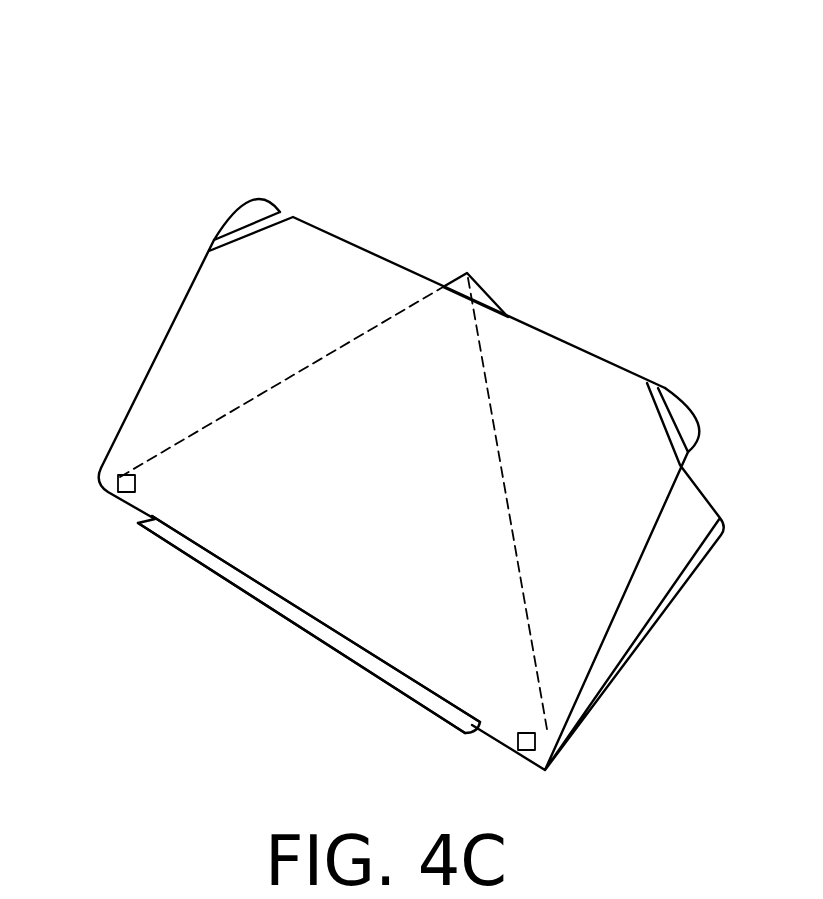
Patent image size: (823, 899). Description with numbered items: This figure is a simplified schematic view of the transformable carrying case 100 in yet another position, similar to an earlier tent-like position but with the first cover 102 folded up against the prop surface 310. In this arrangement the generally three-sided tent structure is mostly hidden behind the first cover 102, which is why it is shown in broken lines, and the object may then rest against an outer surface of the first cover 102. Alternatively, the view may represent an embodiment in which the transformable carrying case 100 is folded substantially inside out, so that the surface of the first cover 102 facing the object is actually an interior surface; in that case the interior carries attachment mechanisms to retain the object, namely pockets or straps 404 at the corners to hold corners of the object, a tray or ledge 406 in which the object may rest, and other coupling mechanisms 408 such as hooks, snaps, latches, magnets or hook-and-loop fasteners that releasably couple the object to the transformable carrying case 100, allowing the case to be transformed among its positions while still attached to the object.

The transformable carrying case 100 is at (104, 69).
The first cover 102 is at (197, 272).
The prop surface 310 is at (460, 287).
The pockets or straps 404 is at (262, 223).
The tray or ledge 406 is at (213, 565).
The other coupling mechanisms 408 is at (117, 490).